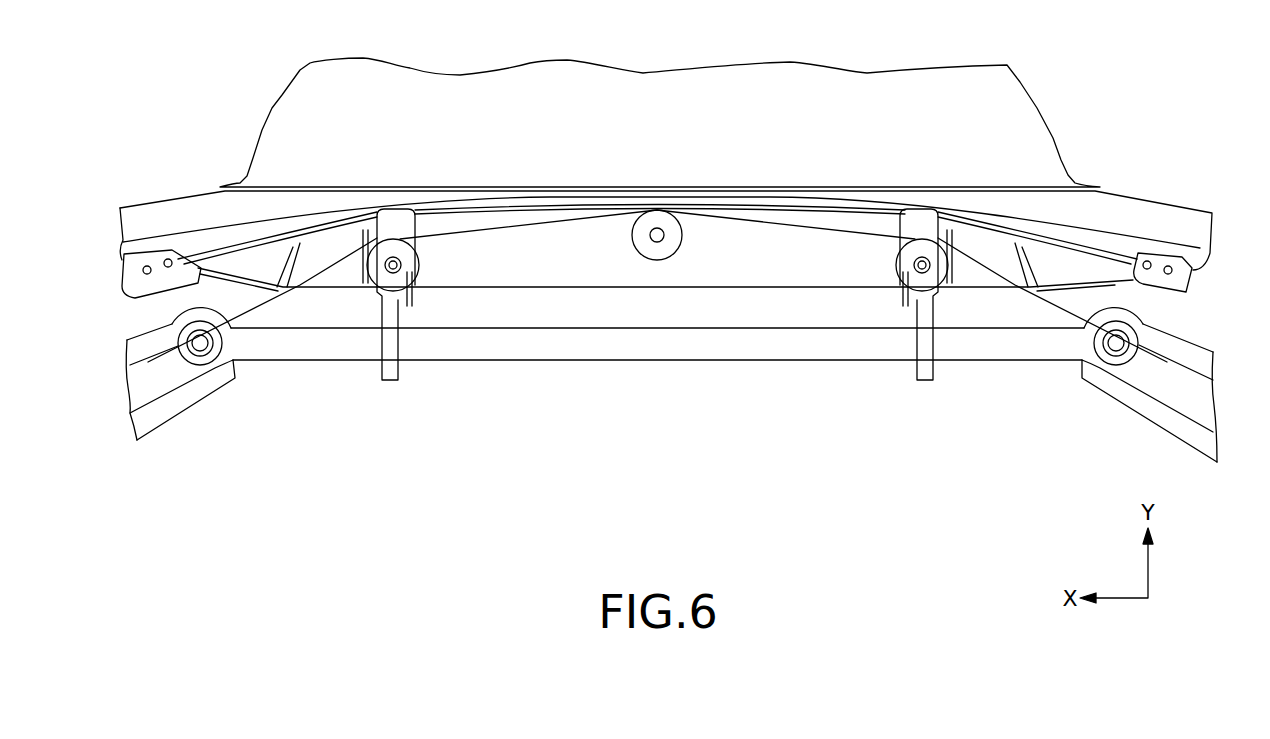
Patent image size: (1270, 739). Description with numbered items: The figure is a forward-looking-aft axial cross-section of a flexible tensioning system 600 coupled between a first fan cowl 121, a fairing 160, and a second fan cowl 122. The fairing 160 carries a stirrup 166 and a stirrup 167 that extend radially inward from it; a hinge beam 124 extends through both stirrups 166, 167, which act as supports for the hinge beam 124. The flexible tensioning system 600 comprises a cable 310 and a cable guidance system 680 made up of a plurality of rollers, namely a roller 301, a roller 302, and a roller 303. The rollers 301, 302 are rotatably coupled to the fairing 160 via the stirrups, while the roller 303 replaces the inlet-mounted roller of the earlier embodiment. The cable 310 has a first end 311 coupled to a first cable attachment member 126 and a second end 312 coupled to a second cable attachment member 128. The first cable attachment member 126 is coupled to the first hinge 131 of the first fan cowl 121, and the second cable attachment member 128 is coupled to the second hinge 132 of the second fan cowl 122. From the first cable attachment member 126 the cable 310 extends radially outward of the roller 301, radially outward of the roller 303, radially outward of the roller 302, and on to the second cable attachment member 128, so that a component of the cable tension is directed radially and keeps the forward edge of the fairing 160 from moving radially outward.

The fairing 160 is at (682, 107).
The cable guidance system 680 is at (666, 267).
The roller 301 is at (410, 260).
The roller 302 is at (905, 256).
The roller 303 is at (672, 246).
The cable 310 is at (548, 230).
The first end 311 is at (175, 331).
The second end 312 is at (1160, 330).
The first cable attachment member 126 is at (202, 366).
The second cable attachment member 128 is at (1082, 364).
The stirrup 166 is at (388, 375).
The stirrup 167 is at (920, 380).
The hinge beam 124 is at (525, 362).
The first fan cowl 121 is at (150, 420).
The second fan cowl 122 is at (1193, 443).
The first hinge 131 is at (236, 398).
The second hinge 132 is at (1099, 409).
The flexible tensioning system 600 is at (665, 420).